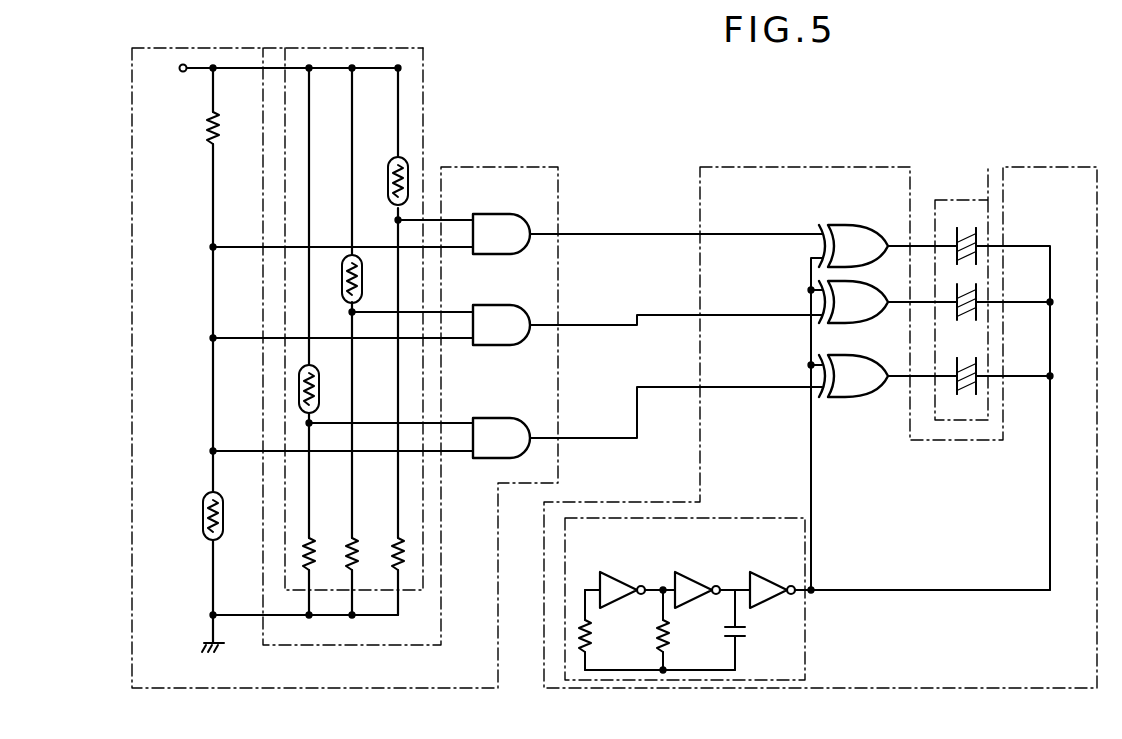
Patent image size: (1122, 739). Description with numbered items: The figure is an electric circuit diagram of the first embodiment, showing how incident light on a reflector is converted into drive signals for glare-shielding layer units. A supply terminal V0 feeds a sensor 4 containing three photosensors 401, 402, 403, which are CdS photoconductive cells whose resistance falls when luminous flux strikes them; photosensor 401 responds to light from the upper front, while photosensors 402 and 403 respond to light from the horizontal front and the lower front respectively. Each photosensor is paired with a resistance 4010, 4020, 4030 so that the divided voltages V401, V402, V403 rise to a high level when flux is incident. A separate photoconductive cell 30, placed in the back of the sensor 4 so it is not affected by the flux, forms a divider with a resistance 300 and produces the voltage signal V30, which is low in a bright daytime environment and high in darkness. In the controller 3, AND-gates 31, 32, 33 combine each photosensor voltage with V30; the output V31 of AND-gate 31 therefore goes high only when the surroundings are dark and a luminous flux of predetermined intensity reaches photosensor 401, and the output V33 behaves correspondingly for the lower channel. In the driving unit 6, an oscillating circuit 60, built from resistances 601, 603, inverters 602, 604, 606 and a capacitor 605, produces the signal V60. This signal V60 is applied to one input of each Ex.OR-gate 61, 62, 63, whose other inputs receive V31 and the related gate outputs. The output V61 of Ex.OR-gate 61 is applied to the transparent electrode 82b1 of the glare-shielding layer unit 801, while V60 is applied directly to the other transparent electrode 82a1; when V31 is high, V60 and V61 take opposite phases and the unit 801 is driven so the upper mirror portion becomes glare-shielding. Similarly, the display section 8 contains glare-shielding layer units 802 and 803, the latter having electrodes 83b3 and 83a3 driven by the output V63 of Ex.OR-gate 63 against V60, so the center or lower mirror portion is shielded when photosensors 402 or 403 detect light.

The sensor 4 is at (423, 52).
The supply voltage terminal V0 is at (267, 68).
The resistance 300 is at (213, 136).
The photoconductive cell 30 is at (206, 494).
The voltage signal V30 is at (484, 249).
The photosensor 401 is at (406, 170).
The photosensor 402 is at (344, 285).
The photosensor 403 is at (320, 381).
The resistor 4030 is at (309, 568).
The resistor 4020 is at (352, 568).
The resistance 4010 is at (398, 568).
The voltage signal V401 is at (471, 218).
The thermistor output voltage V402 is at (470, 312).
The thermistor output voltage V403 is at (462, 420).
The controller 3 is at (561, 176).
The AND-gate 31 is at (525, 221).
The AND gate 32 is at (512, 306).
The AND gate 33 is at (525, 419).
The output signal V31 is at (596, 234).
The AND gate output voltage V33 is at (583, 438).
The driving unit 6 is at (700, 167).
The Ex.OR-gate 61 is at (836, 225).
The exclusive-OR gate 62 is at (866, 324).
The exclusive-OR gate 63 is at (840, 400).
The signal V60 is at (812, 466).
The output signal V61 is at (895, 244).
The exclusive-OR output voltage V63 is at (900, 378).
The display section 8 is at (990, 166).
The glare-shielding layer unit 801 is at (966, 228).
The liquid crystal display element 802 is at (968, 290).
The liquid crystal display element 803 is at (973, 361).
The transparent electrode 82b1 is at (956, 237).
The transparent electrode 82a1 is at (977, 240).
The rear electrode 83b3 is at (958, 387).
The front electrode 83a3 is at (977, 383).
The oscillating circuit 60 is at (805, 650).
The resistor 601 is at (590, 628).
The inverter 602 is at (617, 572).
The resistor 603 is at (667, 628).
The inverter 604 is at (693, 572).
The capacitor 605 is at (741, 633).
The inverter 606 is at (769, 572).